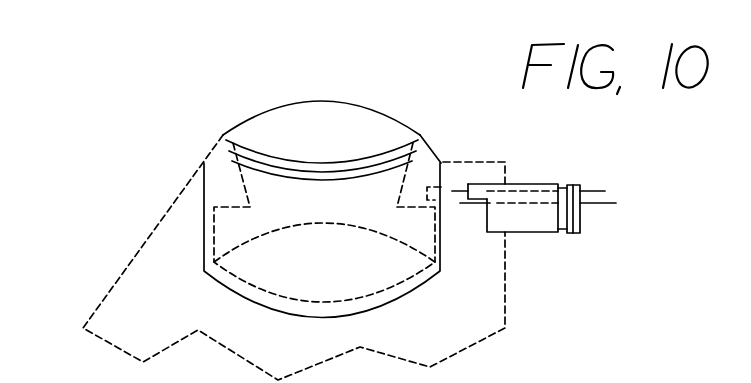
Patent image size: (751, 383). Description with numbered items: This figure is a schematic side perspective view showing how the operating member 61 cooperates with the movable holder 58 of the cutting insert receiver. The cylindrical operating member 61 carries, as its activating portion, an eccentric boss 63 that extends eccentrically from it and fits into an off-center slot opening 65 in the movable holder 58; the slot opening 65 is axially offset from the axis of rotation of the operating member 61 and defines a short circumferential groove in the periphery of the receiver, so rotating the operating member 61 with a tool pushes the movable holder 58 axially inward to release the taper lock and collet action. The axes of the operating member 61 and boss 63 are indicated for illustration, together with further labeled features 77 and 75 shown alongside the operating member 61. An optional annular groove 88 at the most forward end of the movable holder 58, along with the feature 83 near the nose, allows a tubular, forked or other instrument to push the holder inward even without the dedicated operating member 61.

The movable holder 58 is at (282, 200).
The rim 83 is at (241, 151).
The annular groove 88 is at (383, 174).
The slot opening 65 is at (441, 232).
The operating member 61 is at (527, 220).
The eccentric boss 63 is at (482, 184).
The collar 77 is at (591, 191).
The rod 75 is at (602, 204).